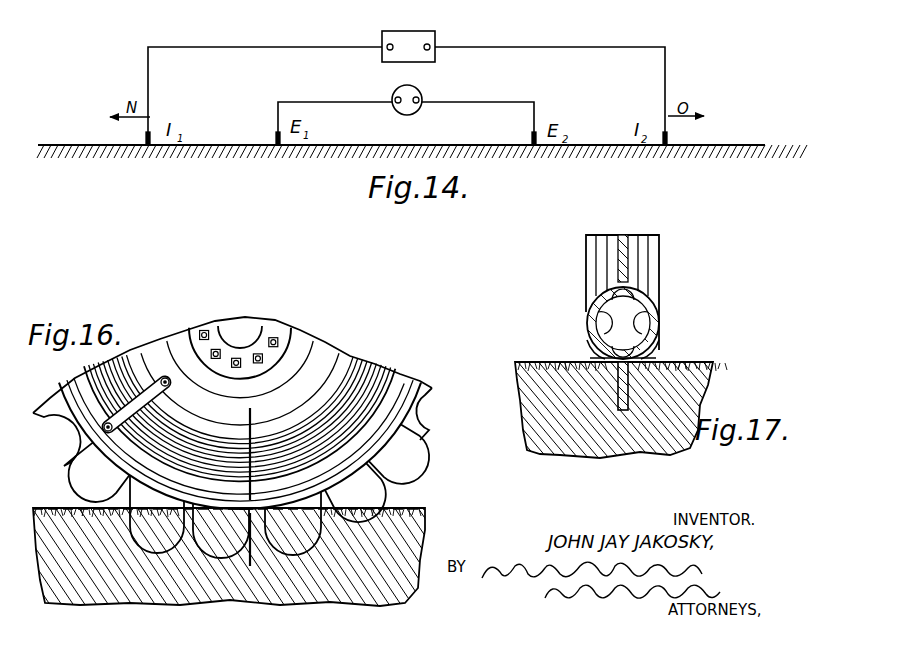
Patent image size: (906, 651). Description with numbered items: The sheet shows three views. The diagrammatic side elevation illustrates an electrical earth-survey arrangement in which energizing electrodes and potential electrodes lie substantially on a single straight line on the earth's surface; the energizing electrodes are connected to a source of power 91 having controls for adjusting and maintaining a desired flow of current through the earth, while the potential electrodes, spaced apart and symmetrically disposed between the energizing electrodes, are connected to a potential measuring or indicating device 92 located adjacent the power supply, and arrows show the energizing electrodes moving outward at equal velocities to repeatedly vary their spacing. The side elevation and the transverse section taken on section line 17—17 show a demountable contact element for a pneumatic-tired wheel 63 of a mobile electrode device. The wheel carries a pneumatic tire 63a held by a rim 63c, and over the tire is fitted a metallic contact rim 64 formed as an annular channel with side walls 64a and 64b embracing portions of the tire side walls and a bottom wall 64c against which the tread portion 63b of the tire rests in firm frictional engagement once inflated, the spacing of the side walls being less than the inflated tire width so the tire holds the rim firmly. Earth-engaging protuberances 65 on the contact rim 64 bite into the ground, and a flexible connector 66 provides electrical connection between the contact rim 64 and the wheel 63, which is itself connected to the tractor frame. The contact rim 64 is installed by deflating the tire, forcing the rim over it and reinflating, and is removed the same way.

In FIG. 14, the source of power 91 is at (434, 36).
In FIG. 14, the current source instrument 92 is at (417, 96).
In FIG. 16, the section line 17- 17 is at (256, 493).
In FIG. 16, the wheel 63 is at (298, 346).
In FIG. 17, the wheel 63 is at (629, 254).
In FIG. 16, the pneumatic tire 63a is at (374, 364).
In FIG. 17, the pneumatic tire 63a is at (661, 325).
In FIG. 17, the tread portion 63b is at (624, 348).
In FIG. 16, the rim 63c is at (167, 428).
In FIG. 17, the rim 63c is at (647, 302).
In FIG. 16, the metallic contact rim 64 is at (393, 397).
In FIG. 17, the metallic contact rim 64 is at (669, 354).
In FIG. 17, the side wall 64a is at (663, 344).
In FIG. 17, the side wall 64b is at (588, 338).
In FIG. 17, the bottom wall 64c is at (643, 364).
In FIG. 16, the earth-engaging protuberances 65 is at (422, 447).
In FIG. 17, the earth-engaging protuberances 65 is at (613, 390).
In FIG. 16, the flexible connector 66 is at (147, 387).